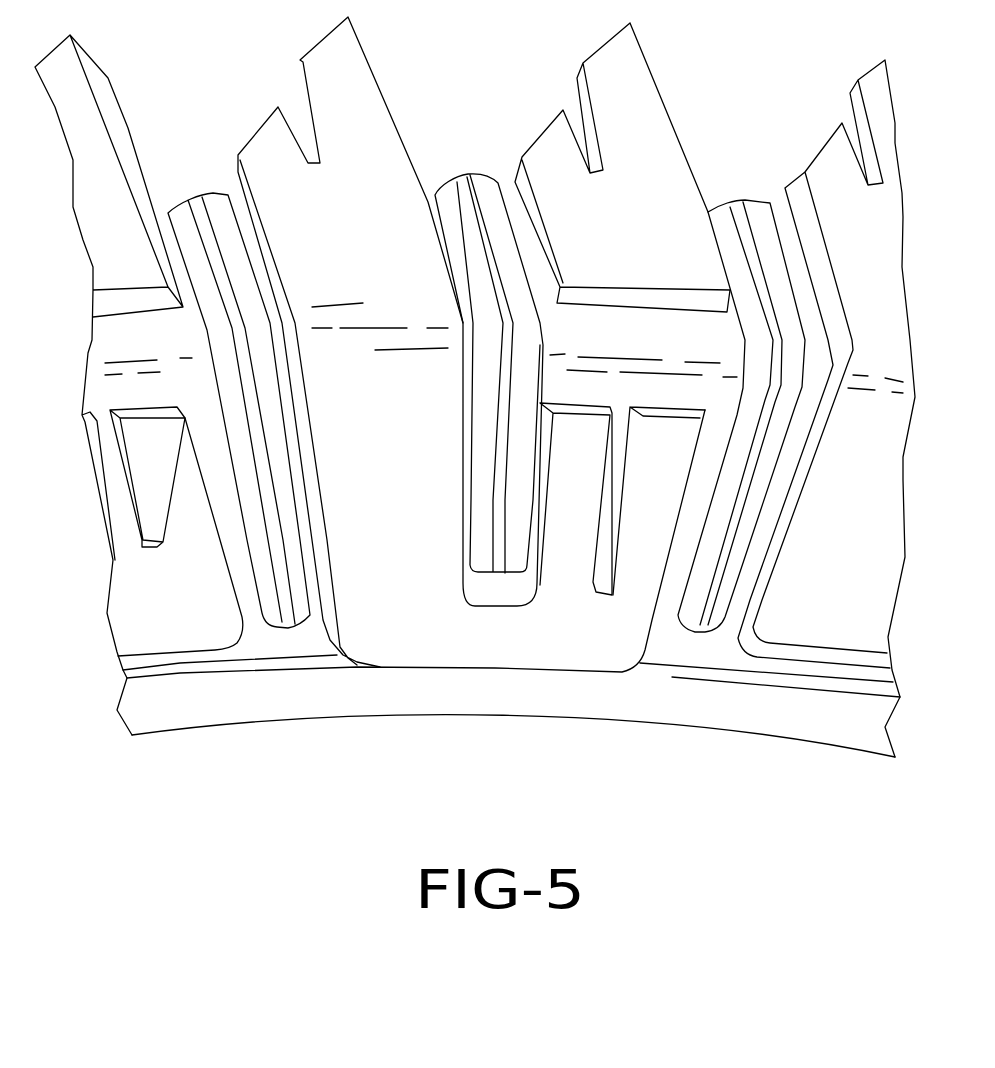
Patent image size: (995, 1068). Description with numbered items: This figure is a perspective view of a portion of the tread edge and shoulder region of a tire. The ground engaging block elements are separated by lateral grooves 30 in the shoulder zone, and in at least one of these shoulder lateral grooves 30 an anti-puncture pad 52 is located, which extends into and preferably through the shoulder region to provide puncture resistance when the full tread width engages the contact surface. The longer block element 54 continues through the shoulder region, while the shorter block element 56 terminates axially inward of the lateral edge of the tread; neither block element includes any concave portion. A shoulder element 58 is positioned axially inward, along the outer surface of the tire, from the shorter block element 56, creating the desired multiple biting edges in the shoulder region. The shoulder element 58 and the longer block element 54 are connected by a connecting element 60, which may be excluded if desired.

The lateral groove 30 is at (205, 174).
The anti-puncture pad 52 is at (692, 613).
The longer block element 54 is at (361, 242).
The shorter block element 56 is at (659, 214).
The shoulder element 58 is at (594, 490).
The connecting element 60 is at (474, 646).